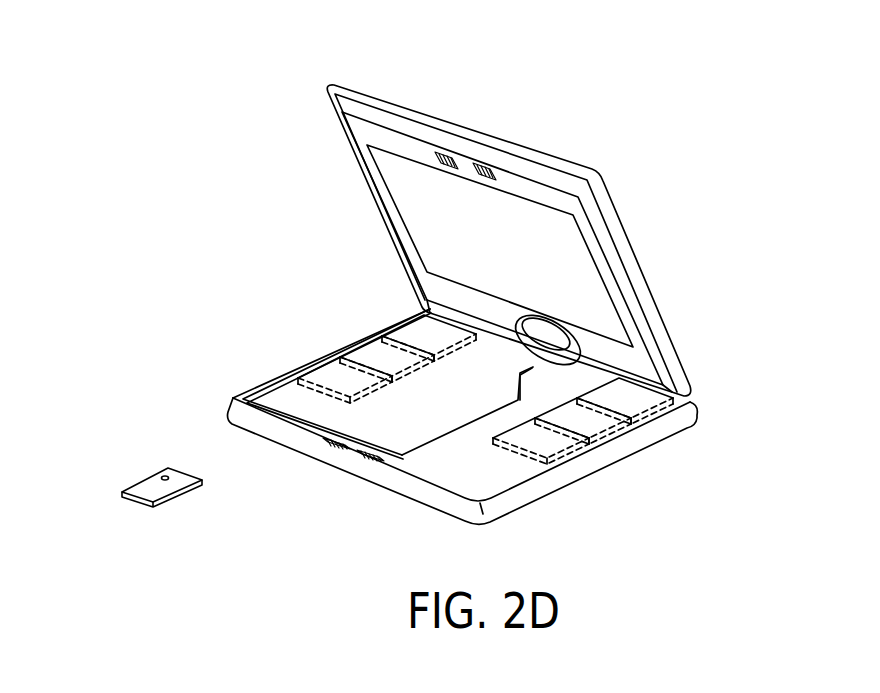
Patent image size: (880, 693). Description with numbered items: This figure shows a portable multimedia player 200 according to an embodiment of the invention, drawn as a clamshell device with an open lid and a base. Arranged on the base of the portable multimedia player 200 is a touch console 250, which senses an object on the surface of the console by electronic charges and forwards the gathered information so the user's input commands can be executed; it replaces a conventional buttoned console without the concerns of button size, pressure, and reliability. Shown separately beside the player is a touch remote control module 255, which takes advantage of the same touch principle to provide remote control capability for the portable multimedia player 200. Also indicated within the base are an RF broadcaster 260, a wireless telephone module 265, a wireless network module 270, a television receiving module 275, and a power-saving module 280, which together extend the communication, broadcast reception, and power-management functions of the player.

The portable multimedia player 200 is at (491, 303).
The touch console 250 is at (401, 318).
The touch remote control module 255 is at (153, 490).
The RF broadcaster 260 is at (357, 338).
The wireless telephone module 265 is at (317, 363).
The wireless network module 270 is at (688, 421).
The television receiving module 275 is at (623, 437).
The power-saving module 280 is at (580, 462).